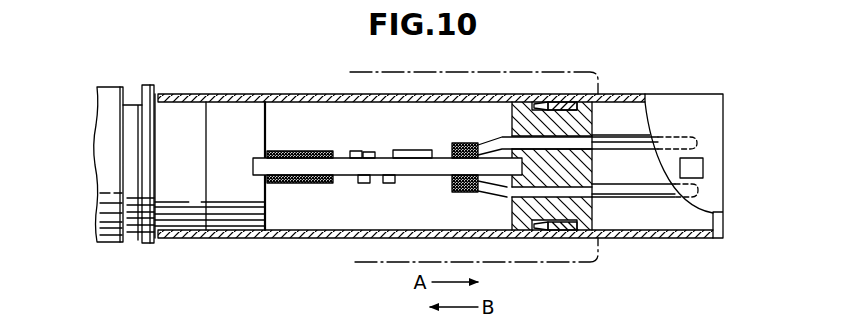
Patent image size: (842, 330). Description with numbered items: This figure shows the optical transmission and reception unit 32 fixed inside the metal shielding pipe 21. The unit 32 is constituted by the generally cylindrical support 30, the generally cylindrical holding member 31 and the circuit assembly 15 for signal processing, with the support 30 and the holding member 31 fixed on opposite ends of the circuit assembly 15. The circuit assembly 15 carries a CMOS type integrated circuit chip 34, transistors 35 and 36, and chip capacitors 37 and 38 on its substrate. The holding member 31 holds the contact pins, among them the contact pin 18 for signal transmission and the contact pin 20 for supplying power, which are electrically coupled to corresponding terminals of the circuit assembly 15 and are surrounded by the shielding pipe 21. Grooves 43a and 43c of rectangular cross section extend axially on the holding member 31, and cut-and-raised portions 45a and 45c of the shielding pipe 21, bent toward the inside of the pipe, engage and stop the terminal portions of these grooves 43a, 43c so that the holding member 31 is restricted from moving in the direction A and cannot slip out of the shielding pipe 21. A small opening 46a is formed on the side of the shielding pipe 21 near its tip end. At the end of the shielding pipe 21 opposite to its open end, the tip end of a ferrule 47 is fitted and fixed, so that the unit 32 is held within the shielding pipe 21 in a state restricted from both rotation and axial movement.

The circuit assembly 15 is at (427, 176).
The contact pin for signal transmission 18 is at (630, 134).
The contact pin for supplying power 20 is at (626, 193).
The shielding pipe 21 is at (690, 98).
The support 30 is at (221, 105).
The holding member 31 is at (597, 171).
The optical transmission and reception unit 32 is at (318, 216).
The CMOS type integrated circuit chip 34 is at (412, 150).
The transistor 35 is at (355, 150).
The transistor 36 is at (368, 151).
The chip capacitor 37 is at (391, 183).
The chip capacitor 38 is at (363, 183).
The groove having a rectangular cross section 43a is at (572, 103).
The groove having a rectangular cross section 43c is at (573, 239).
The cut-and-raised portion 45a is at (540, 104).
The cut-and-raised portion 45c is at (543, 239).
The small opening 46a is at (703, 165).
The ferrule 47 is at (186, 224).